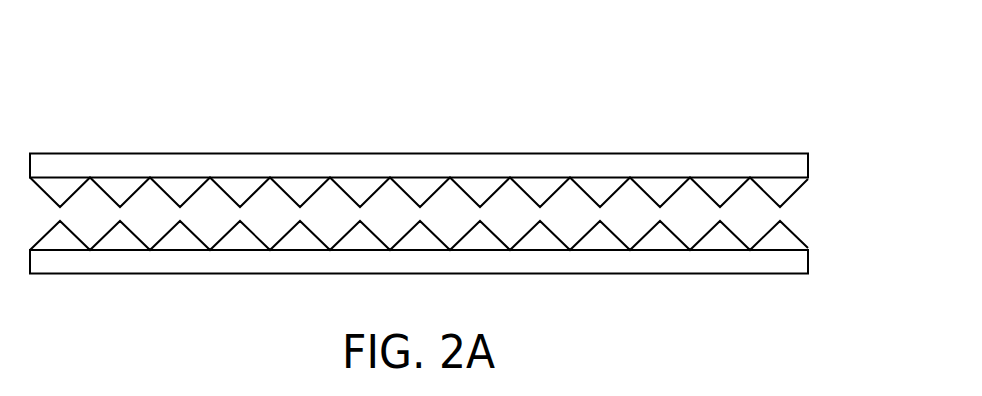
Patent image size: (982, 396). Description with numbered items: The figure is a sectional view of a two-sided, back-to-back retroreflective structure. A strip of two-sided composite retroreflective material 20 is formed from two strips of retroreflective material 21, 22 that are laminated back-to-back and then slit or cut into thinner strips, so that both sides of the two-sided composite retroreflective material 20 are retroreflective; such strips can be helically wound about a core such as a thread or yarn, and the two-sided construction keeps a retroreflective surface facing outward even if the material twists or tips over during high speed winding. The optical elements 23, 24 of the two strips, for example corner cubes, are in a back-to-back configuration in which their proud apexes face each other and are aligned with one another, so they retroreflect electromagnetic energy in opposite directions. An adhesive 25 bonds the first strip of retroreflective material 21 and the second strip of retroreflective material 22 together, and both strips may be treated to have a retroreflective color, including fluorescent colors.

The two-sided composite retroreflective material 20 is at (168, 110).
The first strip of retroreflective material 21 is at (640, 265).
The second strip of retroreflective material 22 is at (662, 161).
The optical elements 23 is at (778, 243).
The optical elements 24 is at (778, 188).
The adhesive 25 is at (765, 213).